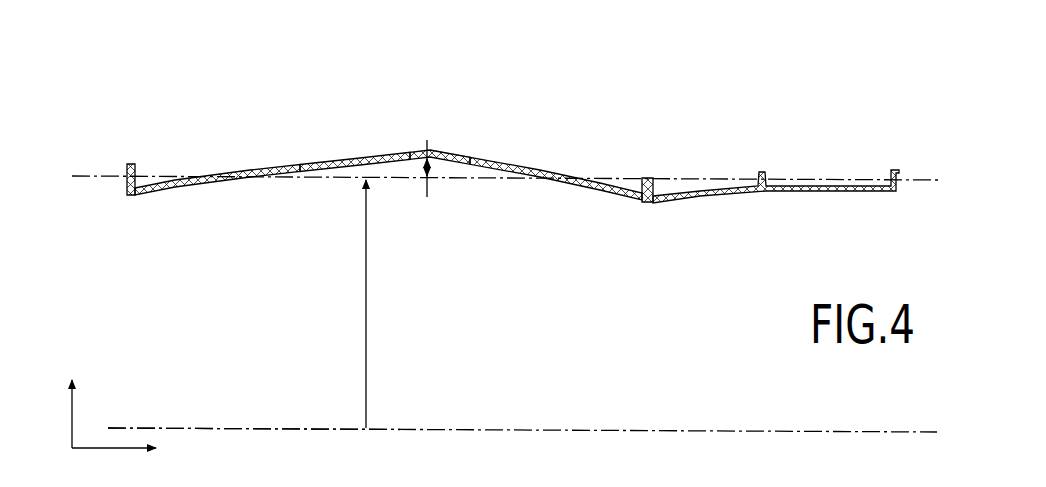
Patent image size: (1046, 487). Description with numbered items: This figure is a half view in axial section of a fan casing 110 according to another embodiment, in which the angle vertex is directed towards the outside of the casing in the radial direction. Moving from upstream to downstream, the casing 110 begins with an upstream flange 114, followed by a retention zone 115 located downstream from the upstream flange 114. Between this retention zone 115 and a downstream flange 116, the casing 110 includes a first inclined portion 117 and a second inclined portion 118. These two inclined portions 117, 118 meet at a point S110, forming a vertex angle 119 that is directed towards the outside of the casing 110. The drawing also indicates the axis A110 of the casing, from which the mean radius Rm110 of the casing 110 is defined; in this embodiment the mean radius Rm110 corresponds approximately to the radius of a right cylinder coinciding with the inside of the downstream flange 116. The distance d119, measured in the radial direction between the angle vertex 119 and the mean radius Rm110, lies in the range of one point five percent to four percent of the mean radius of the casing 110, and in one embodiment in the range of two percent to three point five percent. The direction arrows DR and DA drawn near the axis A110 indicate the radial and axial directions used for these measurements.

The casing 110 is at (485, 121).
The upstream flange 114 is at (126, 172).
The retention zone 115 is at (247, 170).
The first inclined portion 117 is at (351, 159).
The vertex angle 119 is at (429, 149).
The second inclined portion 118 is at (543, 152).
The downstream flange 116 is at (643, 178).
The point S110 is at (445, 152).
The distance d119 is at (427, 179).
The mean radius Rm110 is at (366, 303).
The axis A110 is at (143, 428).
The radial direction DR is at (73, 400).
The axial direction DA is at (133, 450).